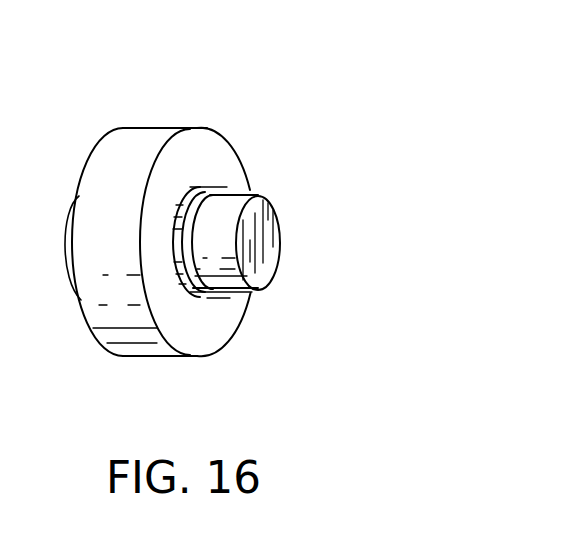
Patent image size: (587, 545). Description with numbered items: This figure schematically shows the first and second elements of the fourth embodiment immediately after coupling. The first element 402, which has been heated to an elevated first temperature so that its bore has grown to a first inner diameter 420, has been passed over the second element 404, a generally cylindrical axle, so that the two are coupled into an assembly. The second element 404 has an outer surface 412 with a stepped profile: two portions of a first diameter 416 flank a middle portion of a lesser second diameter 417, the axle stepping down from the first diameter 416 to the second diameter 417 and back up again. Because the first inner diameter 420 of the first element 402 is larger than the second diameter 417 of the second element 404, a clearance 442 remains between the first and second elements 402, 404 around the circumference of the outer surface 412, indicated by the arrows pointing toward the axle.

The first element 402 is at (146, 148).
The second element 404 is at (63, 240).
The outer surface 412 is at (173, 243).
The first diameter 416 is at (240, 368).
The second diameter 417 is at (187, 306).
The first inner diameter 420 is at (187, 181).
The clearance 442 is at (218, 168).